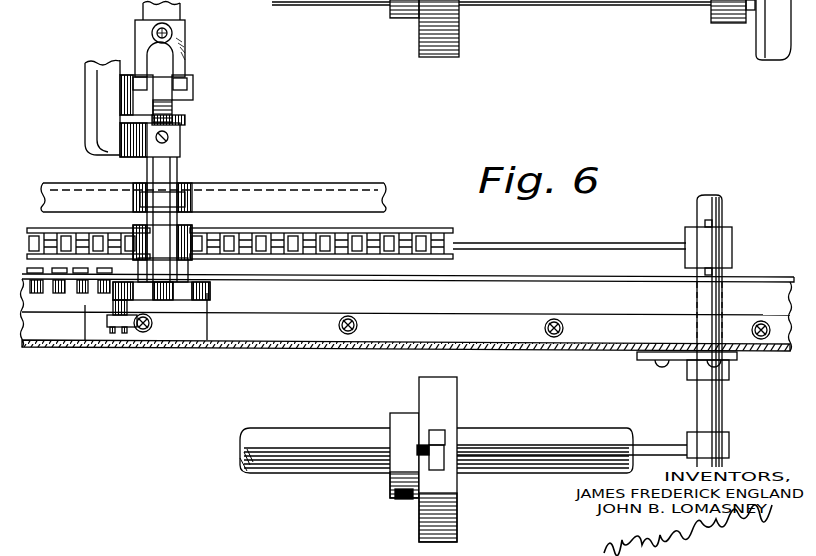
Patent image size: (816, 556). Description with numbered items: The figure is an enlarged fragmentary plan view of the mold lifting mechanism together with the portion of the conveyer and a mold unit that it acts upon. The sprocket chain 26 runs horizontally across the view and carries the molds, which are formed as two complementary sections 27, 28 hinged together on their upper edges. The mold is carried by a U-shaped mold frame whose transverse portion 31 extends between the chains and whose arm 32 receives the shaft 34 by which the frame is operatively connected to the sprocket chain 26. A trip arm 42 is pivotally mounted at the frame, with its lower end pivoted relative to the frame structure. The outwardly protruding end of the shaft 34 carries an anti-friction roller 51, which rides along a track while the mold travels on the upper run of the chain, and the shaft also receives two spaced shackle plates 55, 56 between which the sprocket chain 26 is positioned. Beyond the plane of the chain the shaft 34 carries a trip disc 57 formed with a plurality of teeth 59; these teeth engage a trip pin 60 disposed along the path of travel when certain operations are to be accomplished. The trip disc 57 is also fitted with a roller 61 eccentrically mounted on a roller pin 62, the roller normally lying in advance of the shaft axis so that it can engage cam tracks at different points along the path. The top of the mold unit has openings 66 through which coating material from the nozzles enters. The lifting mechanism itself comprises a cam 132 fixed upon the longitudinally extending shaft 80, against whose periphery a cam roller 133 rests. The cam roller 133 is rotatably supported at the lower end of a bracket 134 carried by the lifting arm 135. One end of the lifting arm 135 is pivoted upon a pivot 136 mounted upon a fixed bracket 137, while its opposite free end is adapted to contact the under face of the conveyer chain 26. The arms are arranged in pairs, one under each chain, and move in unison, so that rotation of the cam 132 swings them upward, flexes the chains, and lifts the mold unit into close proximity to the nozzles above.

The sprocket chain 26 is at (400, 238).
The mold section 27 is at (172, 10).
The mold section 28 is at (150, 12).
The transverse portion 31 is at (97, 70).
The frame arm 32 is at (186, 120).
The shaft 34 is at (158, 247).
The trip arm 42 is at (193, 97).
The anti-friction roller 51 is at (176, 198).
The shackle plate 55 is at (168, 251).
The shackle plate 56 is at (183, 226).
The trip disc 57 is at (208, 289).
The teeth 59 is at (200, 293).
The trip pin 60 is at (63, 279).
The roller 61 is at (121, 329).
The roller pin 62 is at (131, 334).
The opening 66 is at (173, 38).
The longitudinally extending shaft 80 is at (546, 445).
The cam 132 is at (419, 522).
The cam roller 133 is at (439, 436).
The bracket 134 is at (652, 447).
The lifting arm 135 is at (529, 246).
The pivot 136 is at (722, 208).
The fixed bracket 137 is at (648, 362).